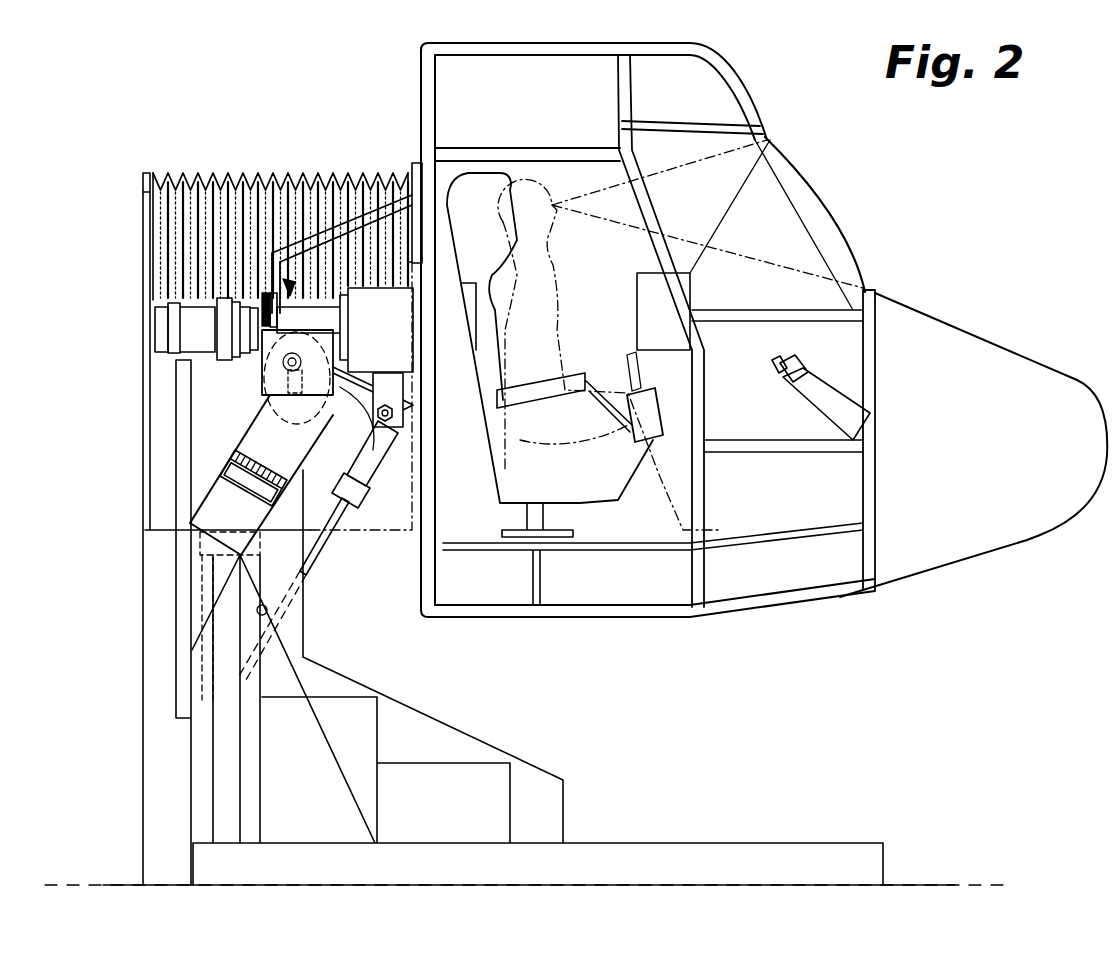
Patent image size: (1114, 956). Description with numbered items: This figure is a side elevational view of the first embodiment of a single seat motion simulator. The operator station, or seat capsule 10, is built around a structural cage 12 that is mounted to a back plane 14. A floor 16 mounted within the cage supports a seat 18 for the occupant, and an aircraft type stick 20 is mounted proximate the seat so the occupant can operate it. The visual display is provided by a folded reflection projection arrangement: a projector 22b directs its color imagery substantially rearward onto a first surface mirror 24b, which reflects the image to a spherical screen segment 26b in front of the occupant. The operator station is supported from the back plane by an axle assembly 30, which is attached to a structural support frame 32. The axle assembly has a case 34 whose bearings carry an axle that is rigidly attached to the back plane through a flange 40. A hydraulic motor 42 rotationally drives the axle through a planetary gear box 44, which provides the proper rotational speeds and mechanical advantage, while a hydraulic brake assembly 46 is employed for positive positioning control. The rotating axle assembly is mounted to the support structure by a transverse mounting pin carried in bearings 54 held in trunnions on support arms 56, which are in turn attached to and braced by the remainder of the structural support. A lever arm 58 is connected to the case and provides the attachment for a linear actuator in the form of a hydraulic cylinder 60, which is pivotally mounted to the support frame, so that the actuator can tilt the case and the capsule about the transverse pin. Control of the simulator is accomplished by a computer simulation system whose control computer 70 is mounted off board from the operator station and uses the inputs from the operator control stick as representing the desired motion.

The seat capsule 10 is at (805, 103).
The structural cage 12 is at (867, 563).
The back plane 14 is at (420, 97).
The floor 16 is at (647, 545).
The seat 18 is at (573, 480).
The aircraft type stick 20 is at (665, 440).
The projector 22b is at (868, 422).
The first surface mirror 24b is at (700, 352).
The spherical screen segment 26b is at (823, 197).
The axle assembly 30 is at (282, 197).
The structural support frame 32 is at (141, 634).
The case 34 is at (305, 260).
The flange 40 is at (405, 325).
The hydraulic motor 42 is at (197, 313).
The planetary gear box 44 is at (255, 305).
The hydraulic brake assembly 46 is at (152, 328).
The bearings 54 is at (287, 363).
The support arms 56 is at (215, 505).
The lever arm 58 is at (333, 413).
The hydraulic cylinder 60 is at (318, 550).
The control computer 70 is at (452, 763).